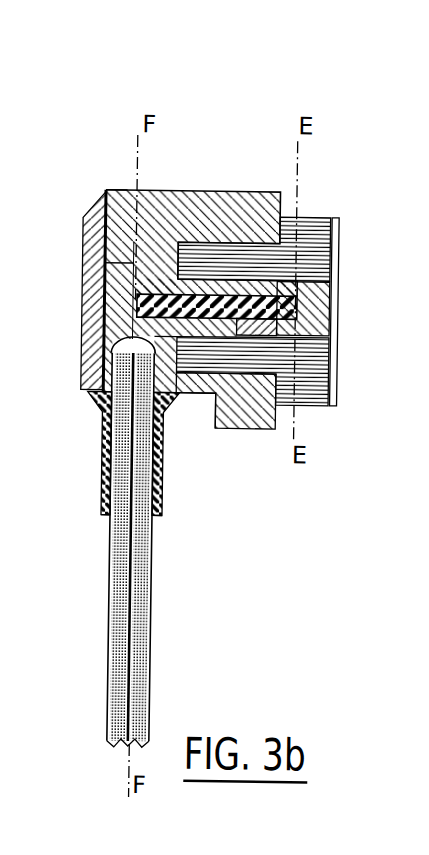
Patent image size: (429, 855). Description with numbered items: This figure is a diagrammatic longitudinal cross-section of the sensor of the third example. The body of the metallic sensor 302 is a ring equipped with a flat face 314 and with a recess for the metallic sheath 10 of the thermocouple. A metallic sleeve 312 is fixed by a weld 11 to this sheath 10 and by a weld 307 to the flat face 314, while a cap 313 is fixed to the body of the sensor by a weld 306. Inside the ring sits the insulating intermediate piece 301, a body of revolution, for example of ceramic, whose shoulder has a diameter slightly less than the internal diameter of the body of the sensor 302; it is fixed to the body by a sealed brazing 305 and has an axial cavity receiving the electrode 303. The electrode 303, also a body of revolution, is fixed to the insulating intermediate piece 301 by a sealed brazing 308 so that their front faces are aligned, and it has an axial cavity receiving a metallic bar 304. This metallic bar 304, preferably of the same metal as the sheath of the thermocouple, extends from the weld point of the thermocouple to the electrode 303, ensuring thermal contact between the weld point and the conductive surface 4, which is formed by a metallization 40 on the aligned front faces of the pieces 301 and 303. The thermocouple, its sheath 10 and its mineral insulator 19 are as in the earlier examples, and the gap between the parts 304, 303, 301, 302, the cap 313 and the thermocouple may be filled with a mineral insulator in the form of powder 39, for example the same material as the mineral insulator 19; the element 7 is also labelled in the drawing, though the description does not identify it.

The conductive surface 4 is at (265, 338).
The sealing ring 7 is at (101, 339).
The metallic sheath 10 is at (176, 542).
The weld 11 is at (166, 523).
The mineral insulator 19 is at (145, 576).
The mineral insulator in the form of powder 39 is at (101, 265).
The metallization 40 is at (337, 227).
The insulating intermediate piece 301 is at (314, 391).
The body of the metallic sensor 302 is at (154, 304).
The electrode 303 is at (320, 302).
The metallic bar 304 is at (291, 314).
The sealed brazing 305 is at (226, 232).
The weld 306 is at (108, 182).
The weld 307 is at (72, 396).
The sealed brazing 308 is at (319, 268).
The metallic sleeve 312 is at (174, 493).
The cap 313 is at (71, 311).
The flat face 314 is at (208, 398).